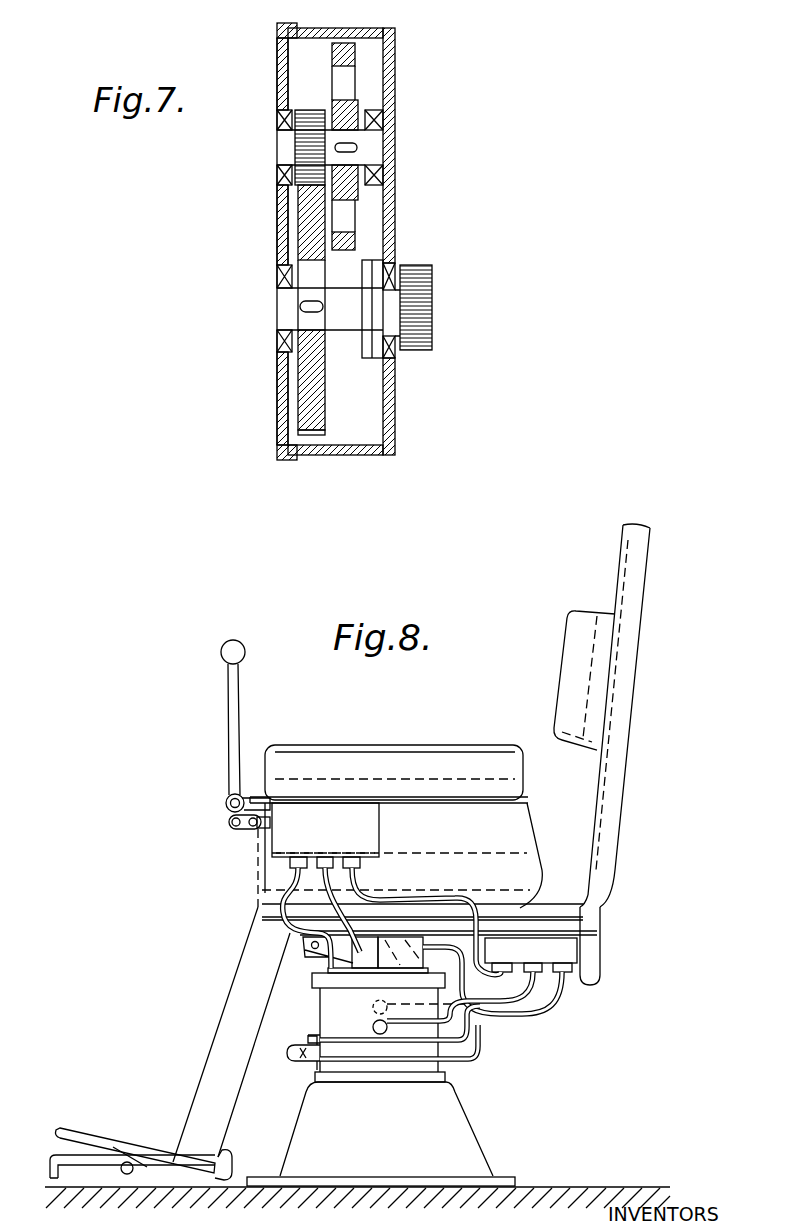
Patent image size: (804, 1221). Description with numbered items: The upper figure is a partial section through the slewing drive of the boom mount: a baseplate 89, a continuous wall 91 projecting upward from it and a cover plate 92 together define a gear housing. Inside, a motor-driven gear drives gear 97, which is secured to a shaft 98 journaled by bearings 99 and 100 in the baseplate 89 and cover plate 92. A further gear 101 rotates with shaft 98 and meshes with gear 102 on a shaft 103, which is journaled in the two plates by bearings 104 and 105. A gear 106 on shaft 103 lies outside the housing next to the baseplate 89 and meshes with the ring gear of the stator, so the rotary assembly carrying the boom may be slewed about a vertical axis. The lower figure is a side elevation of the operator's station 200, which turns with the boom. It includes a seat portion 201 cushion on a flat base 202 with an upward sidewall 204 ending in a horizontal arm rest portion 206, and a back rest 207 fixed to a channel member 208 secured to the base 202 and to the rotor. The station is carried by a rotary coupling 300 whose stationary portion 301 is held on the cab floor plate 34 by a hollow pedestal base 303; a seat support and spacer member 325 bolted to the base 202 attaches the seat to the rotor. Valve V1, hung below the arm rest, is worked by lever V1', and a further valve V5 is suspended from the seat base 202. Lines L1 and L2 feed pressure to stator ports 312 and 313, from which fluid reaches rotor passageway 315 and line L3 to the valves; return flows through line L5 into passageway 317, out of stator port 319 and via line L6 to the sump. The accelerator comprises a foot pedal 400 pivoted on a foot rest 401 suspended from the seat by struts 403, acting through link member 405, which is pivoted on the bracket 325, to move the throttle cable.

In FIG. 7, the baseplate 89 is at (395, 70).
In FIG. 7, the continuous wall 91 is at (372, 28).
In FIG. 7, the cover plate 92 is at (277, 398).
In FIG. 7, the gear 97 is at (330, 58).
In FIG. 7, the shaft 98 is at (365, 153).
In FIG. 7, the bearing 99 is at (380, 127).
In FIG. 7, the bearing 100 is at (280, 126).
In FIG. 7, the gear 101 is at (308, 110).
In FIG. 7, the gear 102 is at (310, 213).
In FIG. 7, the shaft 103 is at (335, 300).
In FIG. 7, the bearing 104 is at (397, 360).
In FIG. 7, the bearing 105 is at (280, 340).
In FIG. 7, the gear 106 is at (433, 268).
In FIG. 8, the operator's station 200 is at (433, 709).
In FIG. 8, the seat portion 201 is at (545, 863).
In FIG. 8, the base 202 is at (597, 940).
In FIG. 8, the sidewall 204 is at (510, 830).
In FIG. 8, the horizontally extending portion 206 is at (507, 797).
In FIG. 8, the back rest 207 is at (568, 627).
In FIG. 8, the channel member 208 is at (625, 581).
In FIG. 8, the rotary coupling 300 is at (305, 995).
In FIG. 8, the stationary portion 301 is at (323, 1085).
In FIG. 8, the hollow pedestal base 303 is at (480, 1153).
In FIG. 8, the port 312 is at (372, 1005).
In FIG. 8, the port 313 is at (373, 1025).
In FIG. 8, the axial passageway 315 is at (330, 965).
In FIG. 8, the axial passageway 317 is at (387, 943).
In FIG. 8, the port 319 is at (310, 1065).
In FIG. 8, the seat support and spacer member 325 is at (383, 937).
In FIG. 8, the floor plate 34 is at (582, 1186).
In FIG. 8, the foot pedal 400 is at (88, 1135).
In FIG. 8, the foot rest 401 is at (145, 1157).
In FIG. 8, the strut 403 is at (212, 1050).
In FIG. 8, the link member 405 is at (300, 944).
In FIG. 8, the valve V1 is at (282, 836).
In FIG. 8, the actuating lever V1' is at (218, 727).
In FIG. 8, the valve V5 is at (570, 955).
In FIG. 8, the line L1 is at (467, 1021).
In FIG. 8, the line L2 is at (467, 1054).
In FIG. 8, the line L3 is at (292, 887).
In FIG. 8, the line L5 is at (551, 1003).
In FIG. 8, the line L6 is at (455, 1078).